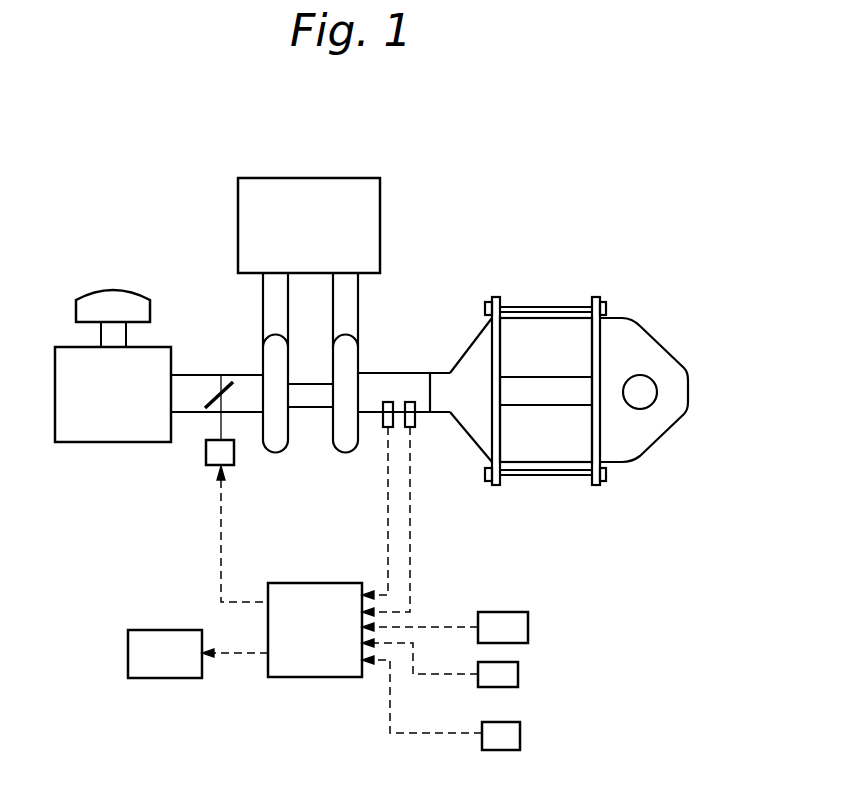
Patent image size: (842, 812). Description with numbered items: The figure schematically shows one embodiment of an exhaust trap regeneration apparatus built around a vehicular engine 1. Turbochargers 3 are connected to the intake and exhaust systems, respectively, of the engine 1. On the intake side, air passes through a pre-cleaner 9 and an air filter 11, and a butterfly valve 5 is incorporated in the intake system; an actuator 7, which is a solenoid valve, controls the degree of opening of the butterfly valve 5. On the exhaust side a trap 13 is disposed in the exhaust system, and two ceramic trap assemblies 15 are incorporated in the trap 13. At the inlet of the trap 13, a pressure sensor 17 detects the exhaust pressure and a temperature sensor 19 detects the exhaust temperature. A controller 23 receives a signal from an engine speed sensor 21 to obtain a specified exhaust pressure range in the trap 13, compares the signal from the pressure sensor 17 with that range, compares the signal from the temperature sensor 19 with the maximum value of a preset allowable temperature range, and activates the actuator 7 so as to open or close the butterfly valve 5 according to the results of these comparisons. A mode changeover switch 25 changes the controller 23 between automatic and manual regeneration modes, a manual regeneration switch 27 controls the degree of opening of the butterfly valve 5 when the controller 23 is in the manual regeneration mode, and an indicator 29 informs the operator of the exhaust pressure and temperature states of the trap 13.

The vehicular engine 1 is at (356, 186).
The turbochargers 3 is at (343, 436).
The butterfly valve 5 is at (222, 376).
The actuator 7 is at (200, 462).
The pre-cleaner 9 is at (116, 300).
The air filter 11 is at (82, 446).
The trap 13 is at (630, 312).
The ceramic trap assemblies 15 is at (536, 420).
The pressure sensor 17 is at (410, 400).
The temperature sensor 19 is at (388, 400).
The engine speed sensor 21 is at (528, 627).
The controller 23 is at (320, 668).
The mode changeover switch 25 is at (518, 675).
The manual regeneration switch 27 is at (520, 738).
The indicator 29 is at (186, 667).